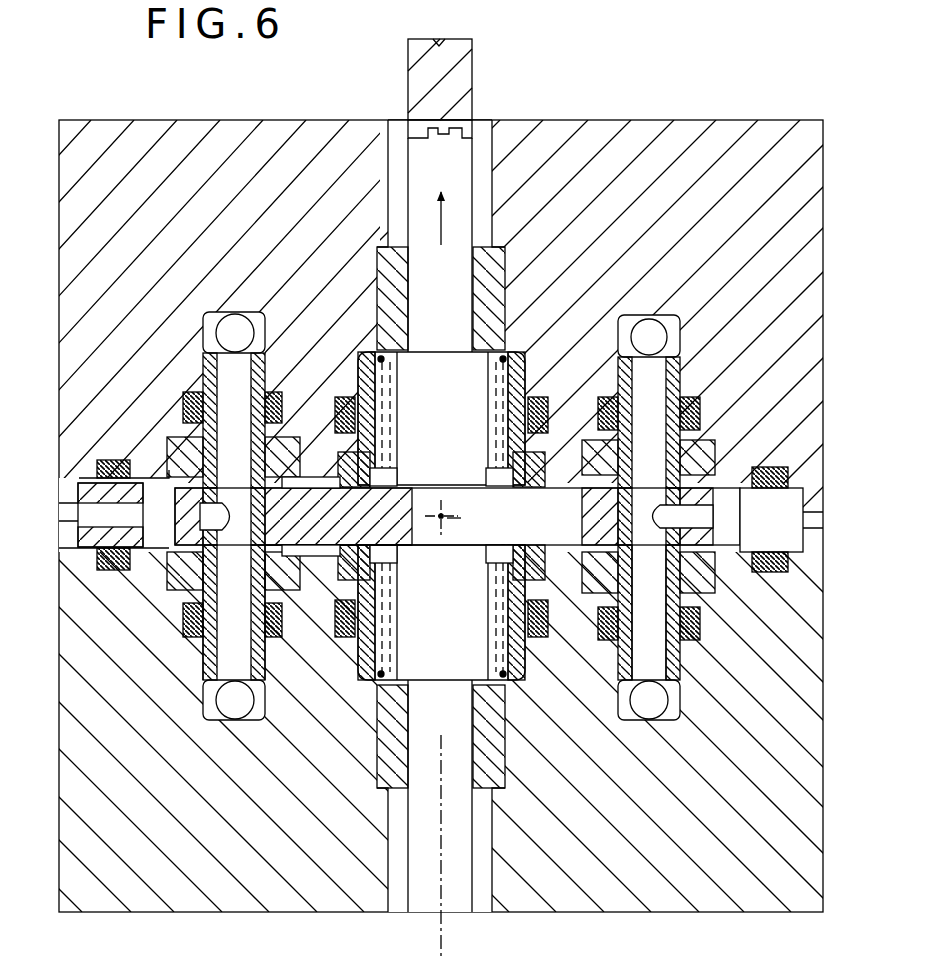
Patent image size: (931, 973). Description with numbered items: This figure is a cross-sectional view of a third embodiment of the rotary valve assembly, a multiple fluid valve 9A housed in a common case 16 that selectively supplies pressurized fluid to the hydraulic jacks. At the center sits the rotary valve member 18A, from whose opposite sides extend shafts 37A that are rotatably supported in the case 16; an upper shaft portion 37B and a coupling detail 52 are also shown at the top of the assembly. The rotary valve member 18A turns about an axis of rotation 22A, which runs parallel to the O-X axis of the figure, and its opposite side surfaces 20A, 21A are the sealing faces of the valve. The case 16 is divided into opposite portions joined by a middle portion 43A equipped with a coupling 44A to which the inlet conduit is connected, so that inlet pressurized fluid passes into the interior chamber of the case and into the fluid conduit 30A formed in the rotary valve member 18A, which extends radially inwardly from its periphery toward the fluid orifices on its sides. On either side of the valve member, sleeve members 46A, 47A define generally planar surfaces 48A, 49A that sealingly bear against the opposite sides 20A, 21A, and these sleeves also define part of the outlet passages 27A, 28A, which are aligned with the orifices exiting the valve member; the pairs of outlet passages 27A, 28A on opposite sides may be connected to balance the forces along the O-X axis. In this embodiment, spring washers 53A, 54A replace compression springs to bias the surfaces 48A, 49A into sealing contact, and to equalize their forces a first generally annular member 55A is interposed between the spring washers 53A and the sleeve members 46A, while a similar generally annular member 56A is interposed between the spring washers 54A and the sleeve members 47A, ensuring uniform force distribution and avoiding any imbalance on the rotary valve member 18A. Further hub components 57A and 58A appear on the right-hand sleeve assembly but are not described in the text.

The valve 9A is at (833, 165).
The upper shaft portion 37B is at (458, 76).
The coupling 52 is at (445, 131).
The shaft 37A is at (462, 424).
The rotary valve member 18A is at (576, 528).
The planar surface 48A is at (266, 512).
The planar surface 49A is at (272, 540).
The fluid conduit 30A is at (240, 522).
The coupling 44A is at (96, 518).
The middle portion 43A is at (90, 542).
The case 16 is at (828, 492).
The outlet passage 27A is at (240, 332).
The outlet passage 28A is at (247, 708).
The sleeve member 46A is at (214, 378).
The spring washer 53A is at (190, 408).
The generally annular member 55A is at (176, 455).
The spring washer 54A is at (185, 612).
The generally annular member 56A is at (180, 578).
The sleeve member 47A is at (203, 668).
The right hub upper bearing 57A is at (622, 450).
The right hub lower portion 58A is at (630, 620).
The side 20A is at (316, 474).
The side 21A is at (316, 558).
The axis of rotation 22A is at (445, 932).